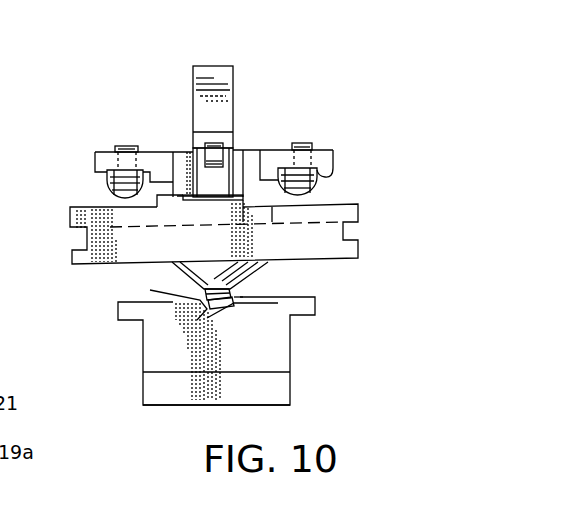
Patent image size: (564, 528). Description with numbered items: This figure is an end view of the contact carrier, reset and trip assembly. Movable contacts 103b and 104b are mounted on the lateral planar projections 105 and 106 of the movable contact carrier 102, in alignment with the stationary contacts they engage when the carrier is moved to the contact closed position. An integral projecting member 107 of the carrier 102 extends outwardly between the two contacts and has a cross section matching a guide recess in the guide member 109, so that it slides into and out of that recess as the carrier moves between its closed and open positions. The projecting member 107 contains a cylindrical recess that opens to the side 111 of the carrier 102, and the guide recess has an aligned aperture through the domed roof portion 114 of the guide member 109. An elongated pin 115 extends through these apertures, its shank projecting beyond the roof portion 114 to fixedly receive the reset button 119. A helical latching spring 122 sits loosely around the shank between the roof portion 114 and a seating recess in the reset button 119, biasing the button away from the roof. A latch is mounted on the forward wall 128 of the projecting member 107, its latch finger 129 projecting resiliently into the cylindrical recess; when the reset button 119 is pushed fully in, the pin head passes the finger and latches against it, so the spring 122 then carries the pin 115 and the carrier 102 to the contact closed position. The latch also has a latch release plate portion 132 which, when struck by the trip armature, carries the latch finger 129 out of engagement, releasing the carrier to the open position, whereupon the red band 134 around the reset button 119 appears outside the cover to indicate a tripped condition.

The movable contact carrier 102 is at (280, 147).
The movable contact 103b is at (108, 184).
The movable contact 104b is at (310, 190).
The lateral planar projection 105 is at (95, 161).
The lateral planar projection 106 is at (333, 154).
The projecting member 107 is at (190, 195).
The guide member 109 is at (312, 243).
The side of movable contact carrier 111 is at (150, 149).
The roof portion 114 is at (240, 283).
The elongated pin 115 is at (240, 298).
The reset button 119 is at (290, 357).
The helical latching spring 122 is at (204, 301).
The forward wall 128 is at (245, 148).
The latch finger 129 is at (214, 148).
The latch release plate portion 132 is at (233, 73).
The red band 134 is at (248, 390).